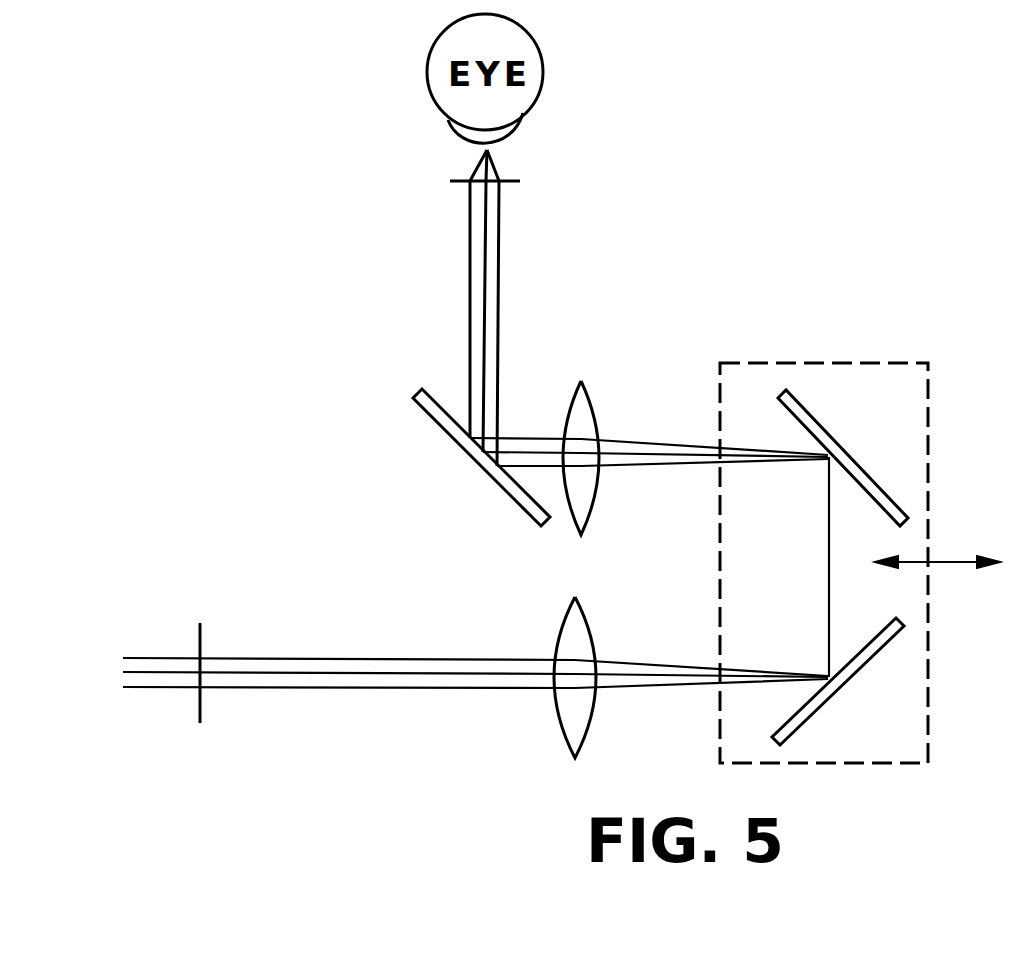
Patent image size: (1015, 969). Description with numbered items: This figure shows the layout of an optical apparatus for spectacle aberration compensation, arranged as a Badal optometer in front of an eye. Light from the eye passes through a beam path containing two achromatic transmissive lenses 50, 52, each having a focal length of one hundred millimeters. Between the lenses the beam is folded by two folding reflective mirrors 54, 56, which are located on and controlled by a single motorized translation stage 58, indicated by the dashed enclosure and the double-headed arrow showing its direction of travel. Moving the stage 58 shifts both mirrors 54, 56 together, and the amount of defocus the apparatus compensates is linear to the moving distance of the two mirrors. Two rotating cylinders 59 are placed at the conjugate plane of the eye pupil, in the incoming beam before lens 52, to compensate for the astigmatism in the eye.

The achromatic transmissive lens 50 is at (590, 400).
The achromatic transmissive lens 52 is at (590, 722).
The folding reflective mirror 54 is at (846, 452).
The folding reflective mirror 56 is at (856, 678).
The motorized translation stage 58 is at (848, 363).
The rotating cylinders 59 is at (200, 640).